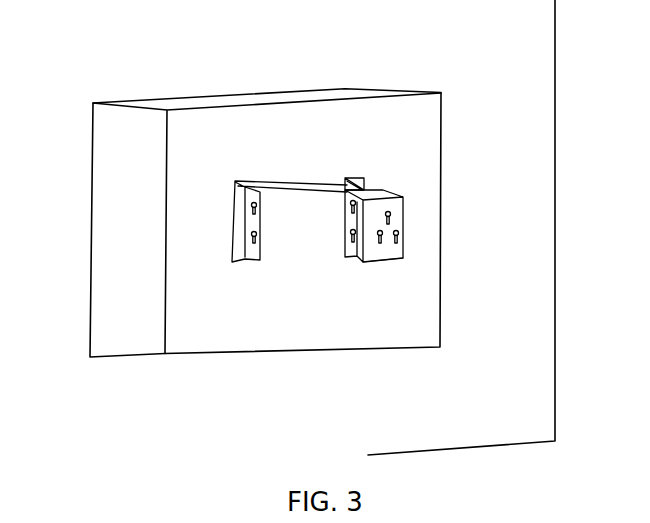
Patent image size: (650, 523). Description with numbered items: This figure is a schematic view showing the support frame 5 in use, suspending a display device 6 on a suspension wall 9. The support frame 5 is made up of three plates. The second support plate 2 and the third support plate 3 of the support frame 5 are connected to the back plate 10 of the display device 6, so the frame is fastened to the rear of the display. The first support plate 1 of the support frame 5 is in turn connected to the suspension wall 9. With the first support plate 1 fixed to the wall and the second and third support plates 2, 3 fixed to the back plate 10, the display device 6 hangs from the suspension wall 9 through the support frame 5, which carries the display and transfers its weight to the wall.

The first support plate 1 is at (402, 215).
The second support plate 2 is at (353, 221).
The third support plate 3 is at (250, 225).
The support frame 5 is at (367, 188).
The display device 6 is at (118, 290).
The suspension wall 9 is at (528, 240).
The back plate 10 is at (425, 248).